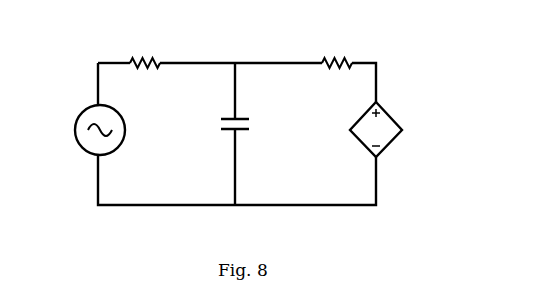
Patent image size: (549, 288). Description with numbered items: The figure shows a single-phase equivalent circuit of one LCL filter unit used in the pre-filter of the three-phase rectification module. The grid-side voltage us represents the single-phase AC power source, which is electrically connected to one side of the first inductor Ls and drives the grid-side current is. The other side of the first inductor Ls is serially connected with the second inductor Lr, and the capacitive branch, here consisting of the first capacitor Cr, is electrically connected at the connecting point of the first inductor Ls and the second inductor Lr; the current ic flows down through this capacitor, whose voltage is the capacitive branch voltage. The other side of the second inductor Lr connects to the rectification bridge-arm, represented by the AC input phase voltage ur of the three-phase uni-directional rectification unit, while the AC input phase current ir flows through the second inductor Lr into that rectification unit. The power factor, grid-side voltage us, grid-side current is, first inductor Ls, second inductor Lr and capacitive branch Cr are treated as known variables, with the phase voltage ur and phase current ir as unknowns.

The grid-side voltage us is at (84, 130).
The first inductor Ls is at (150, 55).
The second inductor Lr is at (337, 55).
The first capacitor Cr is at (219, 142).
The AC input phase voltage ur is at (385, 129).
The grid-side current is is at (180, 73).
The AC input phase current ir is at (298, 73).
The capacitor current ic is at (253, 90).